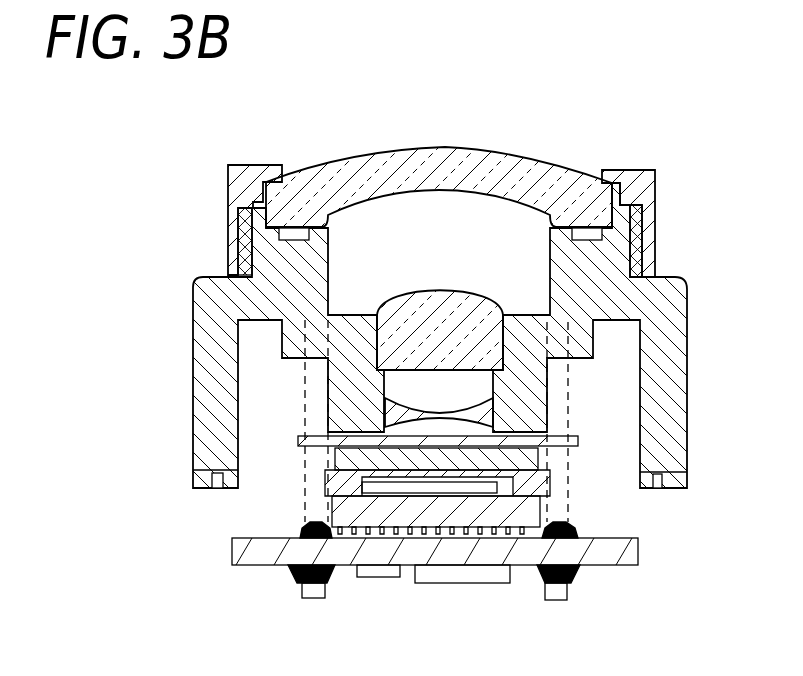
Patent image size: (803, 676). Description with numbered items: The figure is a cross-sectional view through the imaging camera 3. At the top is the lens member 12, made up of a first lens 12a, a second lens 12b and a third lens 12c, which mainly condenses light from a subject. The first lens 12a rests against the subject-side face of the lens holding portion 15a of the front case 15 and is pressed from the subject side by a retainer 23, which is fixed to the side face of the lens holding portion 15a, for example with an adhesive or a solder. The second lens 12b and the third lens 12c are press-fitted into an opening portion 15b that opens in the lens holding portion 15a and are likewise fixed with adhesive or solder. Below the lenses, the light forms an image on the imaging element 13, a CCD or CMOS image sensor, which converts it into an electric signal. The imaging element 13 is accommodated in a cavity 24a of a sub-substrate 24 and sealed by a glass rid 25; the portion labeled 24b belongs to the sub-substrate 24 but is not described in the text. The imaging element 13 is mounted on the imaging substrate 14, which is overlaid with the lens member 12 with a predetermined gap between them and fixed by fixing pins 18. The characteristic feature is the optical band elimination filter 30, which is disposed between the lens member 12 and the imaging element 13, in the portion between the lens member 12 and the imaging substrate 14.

The imaging camera 3 is at (684, 142).
The lens member 12 is at (439, 232).
The first lens 12a is at (341, 168).
The second lens 12b is at (420, 302).
The third lens 12c is at (430, 413).
The imaging element 13 is at (410, 495).
The imaging substrate 14 is at (240, 552).
The front case 15 is at (582, 263).
The lens holding portion 15a is at (335, 220).
The opening portion 15b is at (473, 392).
The fixing pins 18 is at (315, 598).
The retainer 23 is at (258, 163).
The sub-substrate 24 is at (340, 549).
The cavity 24a is at (352, 477).
The holder lower portion 24b is at (515, 538).
The glass rid 25 is at (530, 460).
The optical band elimination filter 30 is at (578, 437).